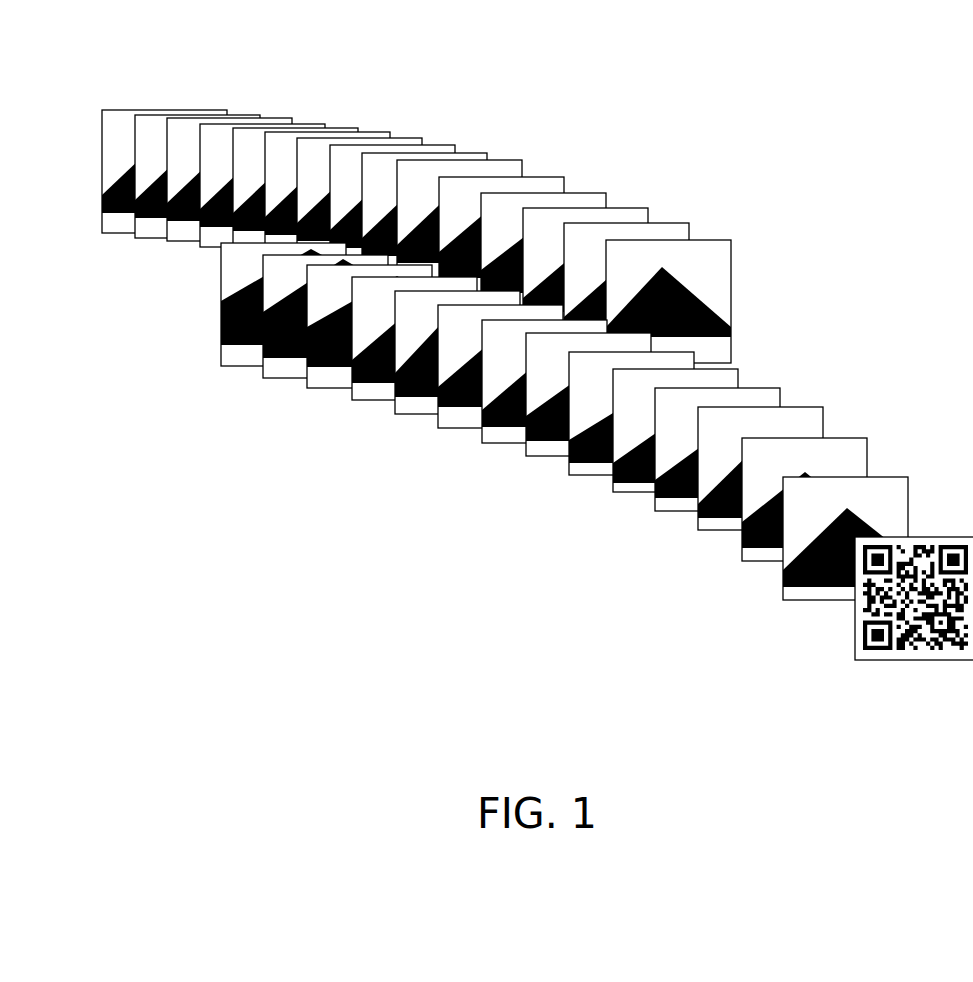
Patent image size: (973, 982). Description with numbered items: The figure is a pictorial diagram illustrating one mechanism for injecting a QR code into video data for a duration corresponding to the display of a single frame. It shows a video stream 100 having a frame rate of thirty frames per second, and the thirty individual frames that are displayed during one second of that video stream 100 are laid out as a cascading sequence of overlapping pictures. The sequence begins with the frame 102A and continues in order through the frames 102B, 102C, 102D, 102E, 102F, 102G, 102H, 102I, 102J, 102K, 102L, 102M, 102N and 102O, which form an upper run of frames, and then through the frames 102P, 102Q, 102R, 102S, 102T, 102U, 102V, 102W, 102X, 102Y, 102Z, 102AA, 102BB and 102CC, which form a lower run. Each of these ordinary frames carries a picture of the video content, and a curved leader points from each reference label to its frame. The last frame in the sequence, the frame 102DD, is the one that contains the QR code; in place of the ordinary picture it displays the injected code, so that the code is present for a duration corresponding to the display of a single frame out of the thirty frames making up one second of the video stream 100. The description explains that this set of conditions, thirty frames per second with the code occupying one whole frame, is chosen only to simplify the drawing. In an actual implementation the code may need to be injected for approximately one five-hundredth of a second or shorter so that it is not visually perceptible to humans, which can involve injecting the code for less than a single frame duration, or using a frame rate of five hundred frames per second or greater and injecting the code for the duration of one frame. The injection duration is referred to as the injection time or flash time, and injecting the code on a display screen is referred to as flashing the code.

The video stream 100 is at (520, 378).
The frame 102A is at (113, 118).
The frame 102B is at (155, 128).
The frame 102C is at (185, 128).
The frame 102D is at (217, 130).
The frame 102E is at (257, 137).
The frame 102F is at (287, 140).
The frame 102G is at (317, 152).
The frame 102H is at (353, 155).
The frame 102I is at (460, 155).
The frame 102J is at (500, 160).
The frame 102K is at (538, 183).
The frame 102L is at (585, 197).
The frame 102M is at (630, 217).
The frame 102N is at (677, 227).
The frame 102O is at (723, 245).
The frame 102P is at (225, 360).
The frame 102Q is at (273, 375).
The frame 102R is at (317, 383).
The frame 102S is at (365, 397).
The frame 102T is at (407, 413).
The frame 102U is at (448, 422).
The frame 102V is at (487, 437).
The frame 102W is at (537, 455).
The frame 102X is at (575, 473).
The frame 102Y is at (625, 485).
The frame 102Z is at (665, 503).
The frame 102AA is at (707, 525).
The frame 102BB is at (747, 557).
The frame 102CC is at (795, 592).
The frame containing the QR code 102DD is at (913, 653).